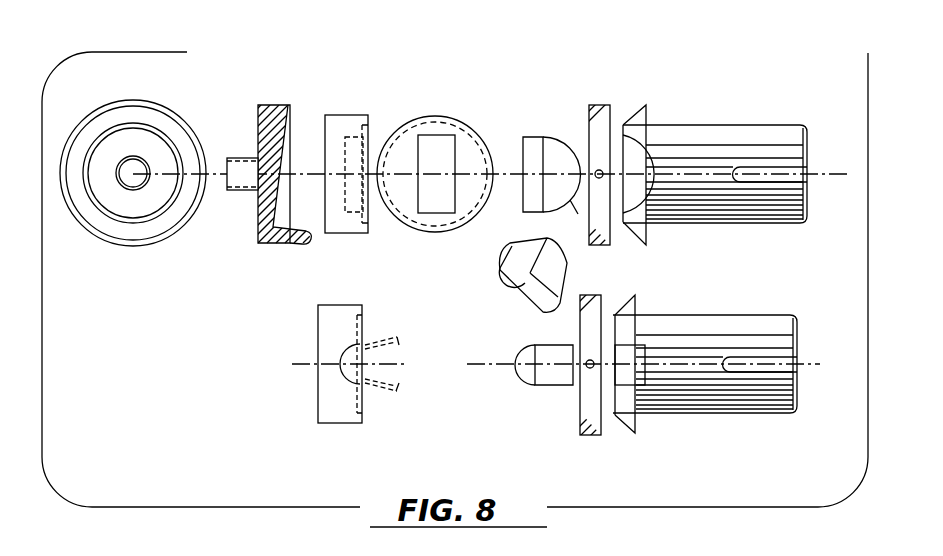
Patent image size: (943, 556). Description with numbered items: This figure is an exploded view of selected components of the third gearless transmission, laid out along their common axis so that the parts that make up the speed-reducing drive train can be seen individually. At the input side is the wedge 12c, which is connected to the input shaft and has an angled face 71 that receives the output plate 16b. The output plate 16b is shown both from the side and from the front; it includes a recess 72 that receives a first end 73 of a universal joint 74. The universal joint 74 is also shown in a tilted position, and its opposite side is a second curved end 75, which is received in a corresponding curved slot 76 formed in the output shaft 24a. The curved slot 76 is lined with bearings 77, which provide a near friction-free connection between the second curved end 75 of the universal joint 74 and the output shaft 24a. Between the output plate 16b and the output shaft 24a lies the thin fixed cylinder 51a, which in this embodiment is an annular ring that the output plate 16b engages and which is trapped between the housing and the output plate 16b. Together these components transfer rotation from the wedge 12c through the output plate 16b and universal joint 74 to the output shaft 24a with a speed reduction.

The wedge 12c is at (270, 102).
The angled face 71 is at (290, 150).
The output plate 16b is at (352, 114).
The recess 72 is at (350, 152).
The first end 73 is at (520, 155).
The universal joint 74 is at (565, 135).
The second curved end 75 is at (572, 202).
The thin fixed cylinder 51a is at (606, 103).
The curved slot 76 is at (625, 150).
The output shaft 24a is at (755, 145).
The bearings 77 is at (400, 343).